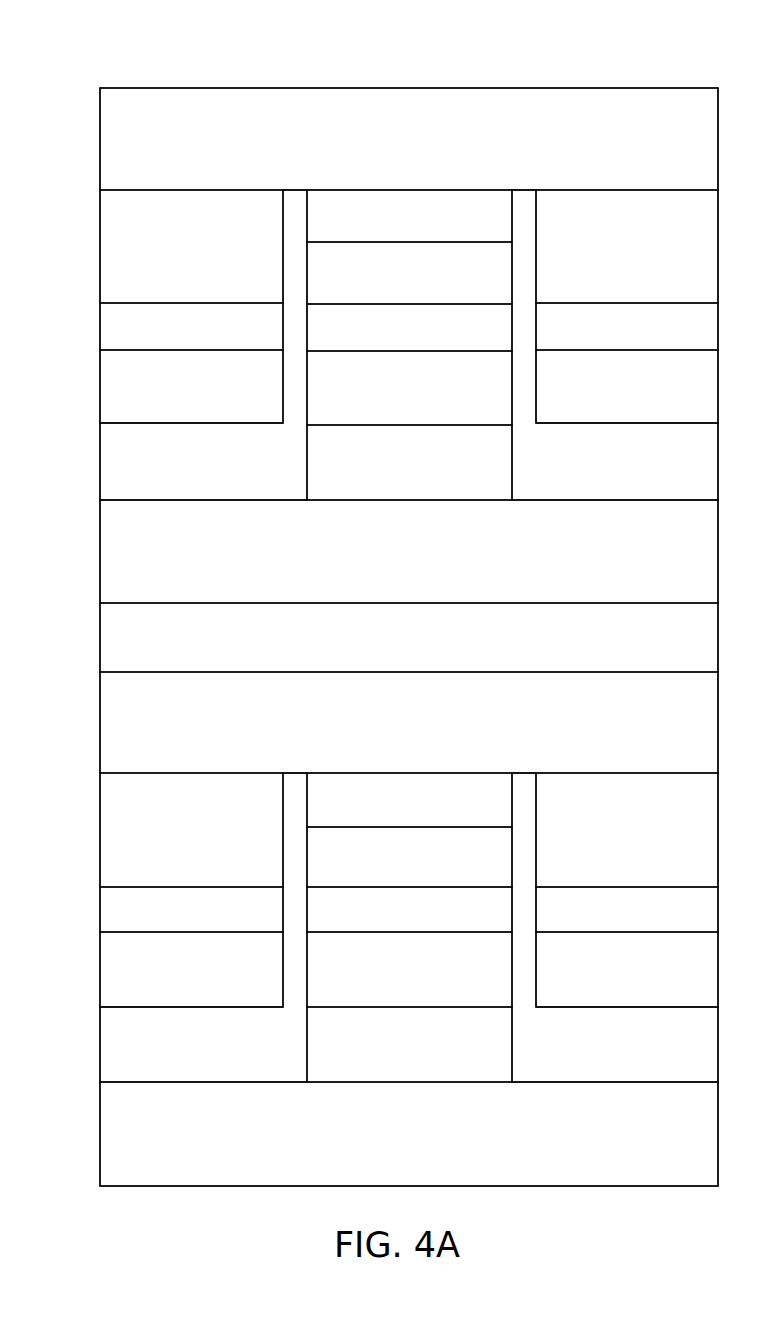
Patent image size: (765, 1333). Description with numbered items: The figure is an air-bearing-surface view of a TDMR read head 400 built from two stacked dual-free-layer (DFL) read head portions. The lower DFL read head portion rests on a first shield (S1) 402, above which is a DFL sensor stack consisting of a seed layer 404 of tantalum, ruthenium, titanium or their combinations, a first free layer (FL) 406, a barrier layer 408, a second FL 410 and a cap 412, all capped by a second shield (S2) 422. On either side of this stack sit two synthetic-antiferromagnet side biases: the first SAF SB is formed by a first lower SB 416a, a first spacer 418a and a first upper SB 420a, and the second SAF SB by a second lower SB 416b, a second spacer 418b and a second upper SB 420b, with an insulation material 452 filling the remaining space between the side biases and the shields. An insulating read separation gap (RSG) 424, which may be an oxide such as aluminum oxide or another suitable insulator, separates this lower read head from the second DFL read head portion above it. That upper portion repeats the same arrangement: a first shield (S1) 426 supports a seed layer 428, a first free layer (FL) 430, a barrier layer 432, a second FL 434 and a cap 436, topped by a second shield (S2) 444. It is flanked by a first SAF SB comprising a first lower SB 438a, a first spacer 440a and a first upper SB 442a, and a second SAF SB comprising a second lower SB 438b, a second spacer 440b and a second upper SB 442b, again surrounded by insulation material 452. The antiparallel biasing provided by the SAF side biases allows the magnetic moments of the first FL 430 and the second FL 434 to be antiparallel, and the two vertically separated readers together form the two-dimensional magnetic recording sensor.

The TDMR read head 400 is at (146, 66).
The first shield (S1) 402 is at (389, 1163).
The seed layer 404 is at (389, 1071).
The first free layer (FL) 406 is at (389, 979).
The barrier layer 408 is at (389, 921).
The second FL 410 is at (389, 863).
The cap 412 is at (389, 811).
The first lower SB 416a is at (167, 979).
The second lower SB 416b is at (602, 979).
The first spacer 418a is at (167, 924).
The second spacer 418b is at (602, 924).
The first upper SB 420a is at (167, 826).
The second upper SB 420b is at (602, 826).
The second shield (S2) 422 is at (389, 758).
The insulating read separation gap (RSG) 424 is at (389, 658).
The first shield (S1) 426 is at (389, 581).
The seed layer 428 is at (389, 488).
The first free layer (FL) 430 is at (389, 398).
The barrier layer 432 is at (389, 336).
The second FL 434 is at (389, 281).
The cap 436 is at (389, 229).
The first lower SB 438a is at (167, 394).
The second lower SB 438b is at (602, 394).
The first spacer 440a is at (167, 339).
The second spacer 440b is at (602, 339).
The first upper SB 442a is at (167, 243).
The second upper SB 442b is at (602, 243).
The second shield (S2) 444 is at (389, 174).
The insulation material 452 is at (169, 478).